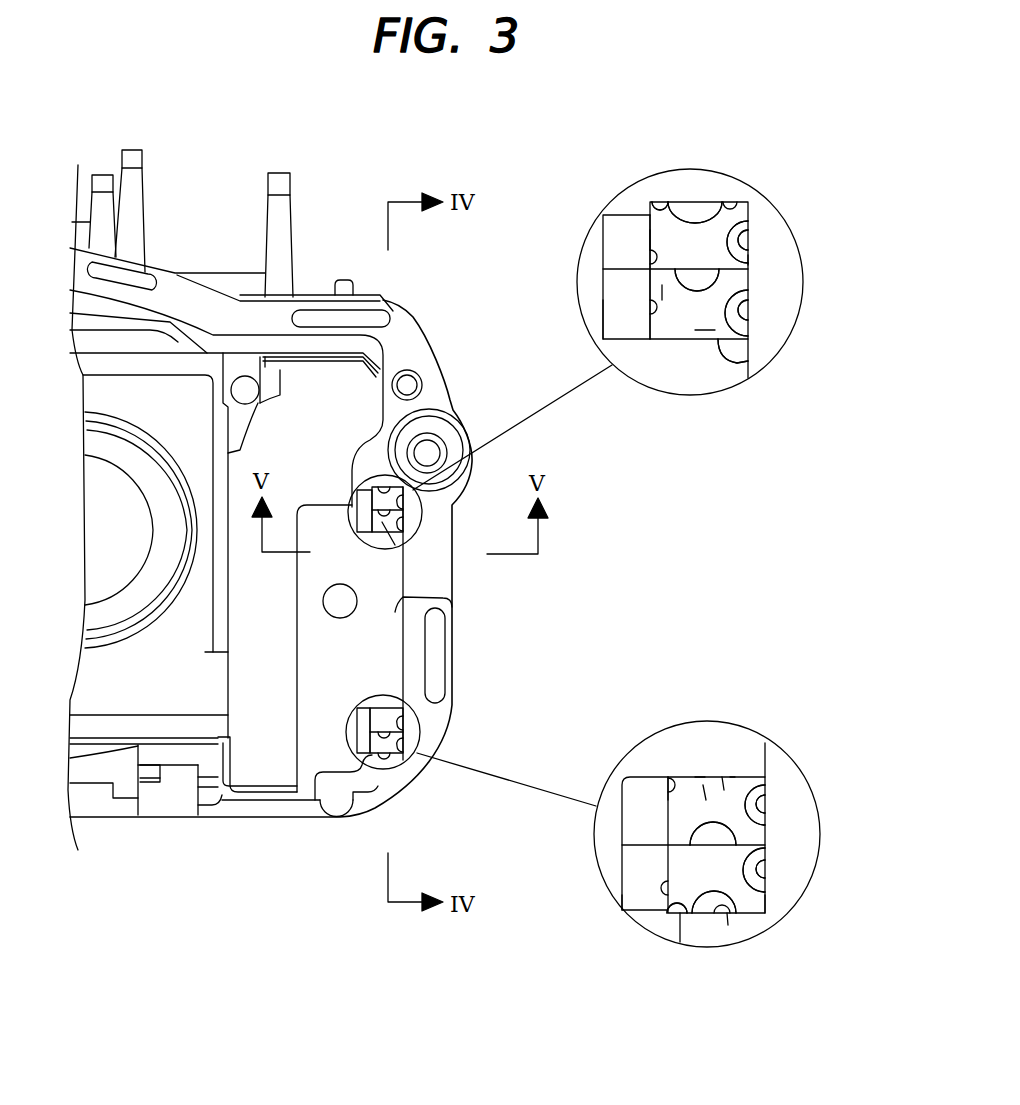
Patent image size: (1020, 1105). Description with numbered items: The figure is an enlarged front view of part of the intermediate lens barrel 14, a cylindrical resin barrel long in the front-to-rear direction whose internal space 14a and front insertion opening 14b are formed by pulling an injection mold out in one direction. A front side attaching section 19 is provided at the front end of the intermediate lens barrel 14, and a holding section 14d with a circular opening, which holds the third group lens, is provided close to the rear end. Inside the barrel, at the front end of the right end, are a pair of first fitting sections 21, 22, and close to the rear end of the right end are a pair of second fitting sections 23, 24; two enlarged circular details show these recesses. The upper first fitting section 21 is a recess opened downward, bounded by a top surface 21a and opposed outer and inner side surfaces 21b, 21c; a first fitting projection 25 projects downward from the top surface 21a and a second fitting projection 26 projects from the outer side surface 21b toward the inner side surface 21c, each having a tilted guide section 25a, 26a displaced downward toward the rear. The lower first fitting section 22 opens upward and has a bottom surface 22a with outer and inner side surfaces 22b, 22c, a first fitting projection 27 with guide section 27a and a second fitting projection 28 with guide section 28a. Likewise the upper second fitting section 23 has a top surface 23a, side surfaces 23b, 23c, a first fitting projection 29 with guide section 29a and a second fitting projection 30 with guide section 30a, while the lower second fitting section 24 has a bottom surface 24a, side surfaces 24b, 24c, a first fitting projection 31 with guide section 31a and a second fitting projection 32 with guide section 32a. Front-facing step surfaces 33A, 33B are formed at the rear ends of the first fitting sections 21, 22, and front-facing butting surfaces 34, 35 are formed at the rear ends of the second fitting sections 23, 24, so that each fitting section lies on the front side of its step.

The intermediate lens barrel 14 is at (410, 332).
The internal space 14a is at (200, 409).
The insertion opening 14b is at (447, 603).
The holding section 14d is at (130, 482).
The front side attaching section 19 is at (427, 363).
The first fitting section 21 is at (403, 503).
The top surface 21a is at (658, 202).
The outer side surface 21b is at (750, 239).
The inner side surface 21c is at (650, 254).
The first fitting section 22 is at (403, 737).
The bottom surface 22a is at (727, 913).
The outer side surface 22b is at (768, 932).
The inner side surface 22c is at (677, 885).
The second fitting section 23 is at (405, 520).
The top surface 23a is at (750, 283).
The outer side surface 23b is at (750, 323).
The inner side surface 23c is at (650, 305).
The second fitting section 24 is at (373, 712).
The bottom surface 24a is at (703, 810).
The outer side surface 24b is at (762, 807).
The inner side surface 24c is at (673, 778).
The first fitting projection 25 is at (650, 215).
The guide section 25a is at (704, 203).
The second fitting projection 26 is at (752, 222).
The guide section 26a is at (750, 262).
The first fitting projection 27 is at (667, 881).
The guide section 27a is at (697, 913).
The second fitting projection 28 is at (767, 890).
The guide section 28a is at (762, 863).
The first fitting projection 29 is at (662, 272).
The guide section 29a is at (697, 289).
The second fitting projection 30 is at (700, 328).
The guide section 30a is at (752, 362).
The first fitting projection 31 is at (700, 833).
The guide section 31a is at (700, 800).
The second fitting projection 32 is at (733, 777).
The guide section 32a is at (760, 805).
The step surface 33A is at (385, 525).
The step surface 33B is at (375, 747).
The butting surface 34 is at (382, 522).
The butting surface 35 is at (380, 705).